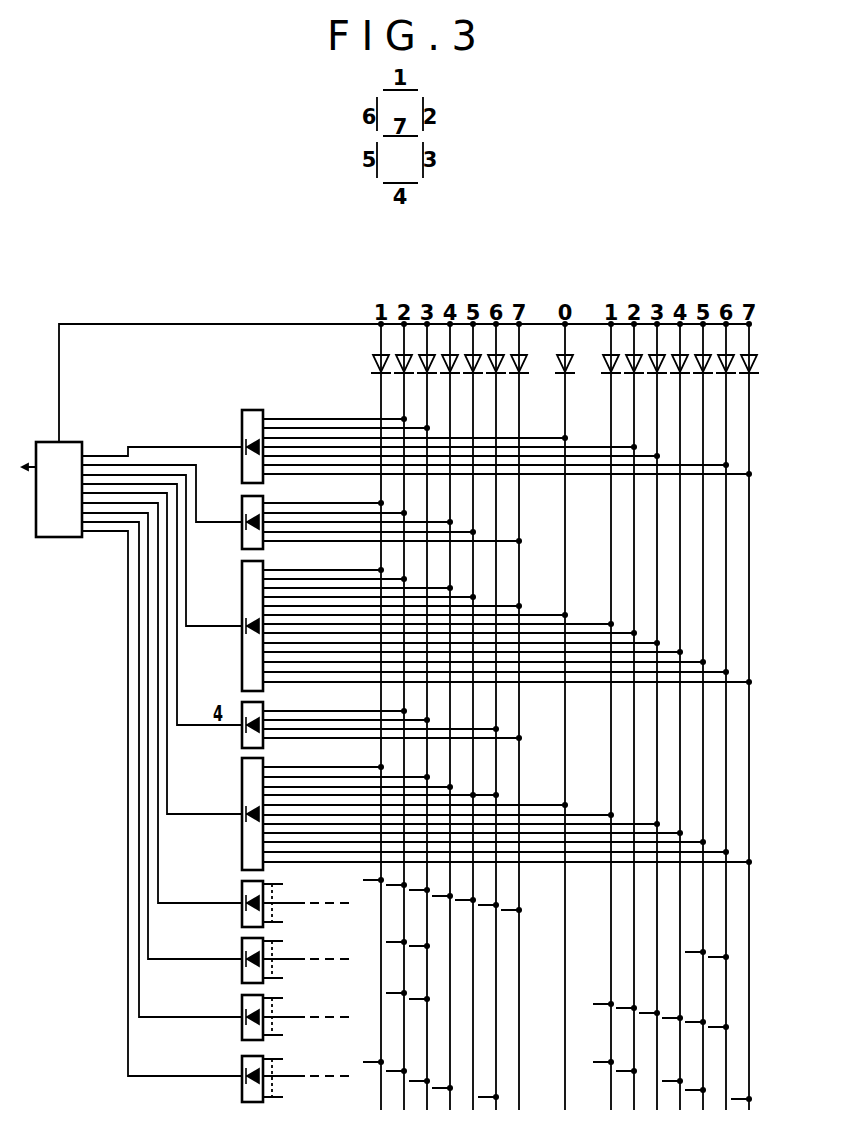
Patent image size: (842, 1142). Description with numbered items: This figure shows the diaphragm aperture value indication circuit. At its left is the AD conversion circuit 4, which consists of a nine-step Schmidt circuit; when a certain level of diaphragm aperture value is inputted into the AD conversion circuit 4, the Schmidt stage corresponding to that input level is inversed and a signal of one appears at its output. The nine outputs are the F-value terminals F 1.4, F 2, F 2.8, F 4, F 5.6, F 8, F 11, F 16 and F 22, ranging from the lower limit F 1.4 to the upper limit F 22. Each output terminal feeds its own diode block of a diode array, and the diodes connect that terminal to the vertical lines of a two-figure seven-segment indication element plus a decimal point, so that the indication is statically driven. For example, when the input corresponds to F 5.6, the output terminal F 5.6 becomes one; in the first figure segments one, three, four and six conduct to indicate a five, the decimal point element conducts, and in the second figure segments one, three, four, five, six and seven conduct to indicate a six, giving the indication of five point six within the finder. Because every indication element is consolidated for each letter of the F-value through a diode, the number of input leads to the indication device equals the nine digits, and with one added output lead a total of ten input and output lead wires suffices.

The AD conversion circuit 4 is at (132, 759).
The F 1.4 output terminal 1.4 is at (478, 446).
The F 2 output terminal 2 is at (368, 522).
The F 2.8 output terminal 2.8 is at (478, 626).
The F 5.6 output terminal 5.6 is at (478, 814).
The F 8 output terminal 8 is at (365, 903).
The F 11 output terminal 11 is at (467, 960).
The F 16 output terminal 16 is at (467, 1016).
The F 22 output terminal 22 is at (478, 1078).